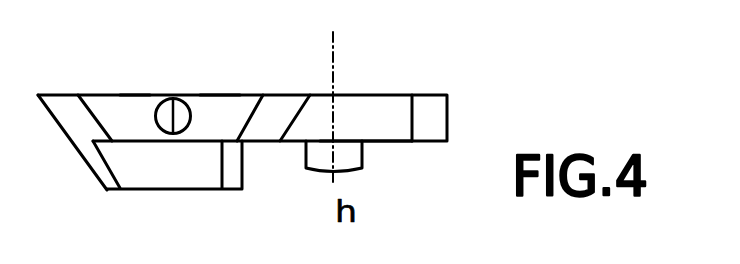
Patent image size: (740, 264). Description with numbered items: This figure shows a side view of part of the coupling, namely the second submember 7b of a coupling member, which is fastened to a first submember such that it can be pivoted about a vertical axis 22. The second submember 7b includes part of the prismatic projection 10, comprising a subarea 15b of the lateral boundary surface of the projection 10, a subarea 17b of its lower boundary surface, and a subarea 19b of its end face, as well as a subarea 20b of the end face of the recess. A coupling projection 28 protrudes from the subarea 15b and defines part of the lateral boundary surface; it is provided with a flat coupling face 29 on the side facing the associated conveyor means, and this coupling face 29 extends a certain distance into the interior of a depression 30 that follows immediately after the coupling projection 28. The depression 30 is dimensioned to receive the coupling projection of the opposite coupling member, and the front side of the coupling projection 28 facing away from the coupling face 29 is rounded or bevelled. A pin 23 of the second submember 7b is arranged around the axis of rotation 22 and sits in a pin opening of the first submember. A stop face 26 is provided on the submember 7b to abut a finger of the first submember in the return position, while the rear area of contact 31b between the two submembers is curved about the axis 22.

The prismatic projection 10 is at (105, 117).
The subarea of end face 19b is at (70, 110).
The subarea of lateral boundary surface 15b is at (143, 117).
The coupling projection 28 is at (167, 98).
The coupling face 29 is at (177, 117).
The depression 30 is at (220, 96).
The subarea of end face of recess 20b is at (270, 113).
The second submember 7b is at (382, 107).
The rear area of contact 31b is at (430, 107).
The stop face 26 is at (165, 165).
The subarea of lower boundary surface 17b is at (118, 193).
The pin 23 is at (348, 152).
The vertical axis 22 is at (357, 217).